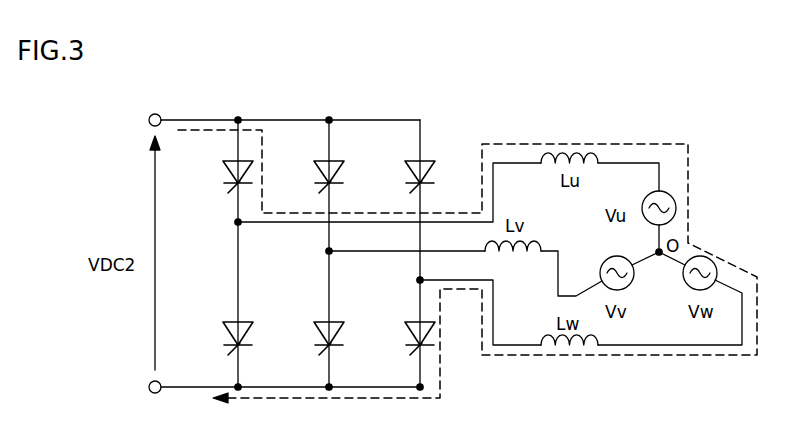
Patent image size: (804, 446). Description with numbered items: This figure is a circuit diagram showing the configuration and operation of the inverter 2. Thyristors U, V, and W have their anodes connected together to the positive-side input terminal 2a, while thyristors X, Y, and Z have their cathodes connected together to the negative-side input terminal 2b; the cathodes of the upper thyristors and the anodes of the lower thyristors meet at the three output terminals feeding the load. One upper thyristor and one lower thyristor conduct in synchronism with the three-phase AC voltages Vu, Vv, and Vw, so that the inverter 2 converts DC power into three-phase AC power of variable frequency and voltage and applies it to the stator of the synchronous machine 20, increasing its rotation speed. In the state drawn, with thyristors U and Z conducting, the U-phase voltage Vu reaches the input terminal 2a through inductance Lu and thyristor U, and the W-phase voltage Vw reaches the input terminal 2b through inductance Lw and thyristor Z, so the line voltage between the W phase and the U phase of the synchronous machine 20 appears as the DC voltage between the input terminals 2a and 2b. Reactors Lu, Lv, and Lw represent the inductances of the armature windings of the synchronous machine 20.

The inverter 2 is at (423, 106).
The positive-side input terminal 2a is at (149, 120).
The negative-side input terminal 2b is at (149, 387).
The synchronous machine 20 is at (723, 178).